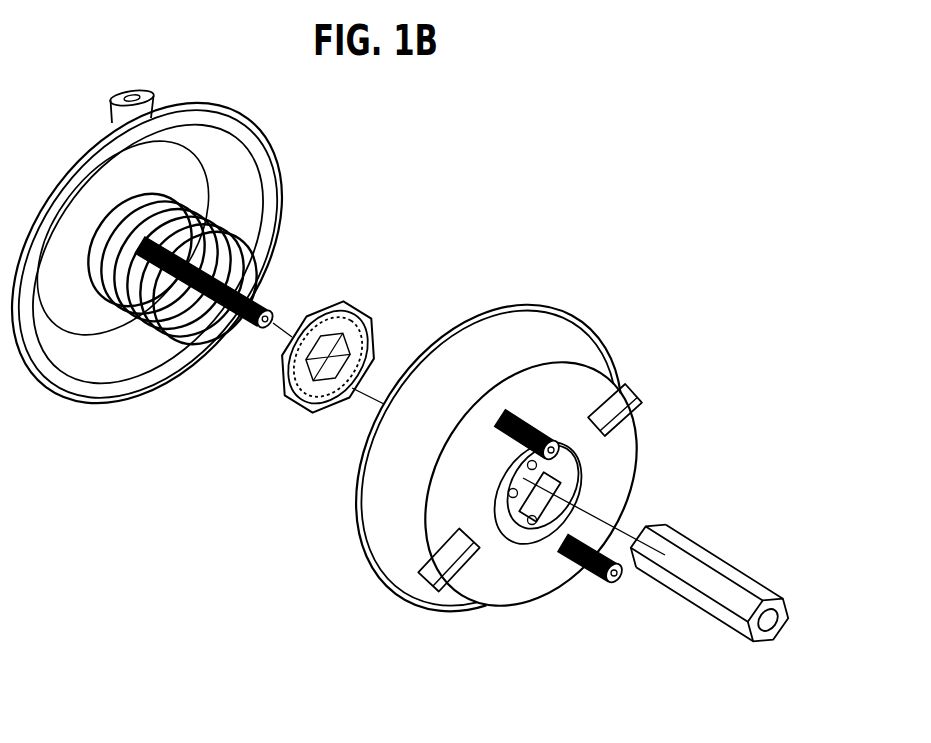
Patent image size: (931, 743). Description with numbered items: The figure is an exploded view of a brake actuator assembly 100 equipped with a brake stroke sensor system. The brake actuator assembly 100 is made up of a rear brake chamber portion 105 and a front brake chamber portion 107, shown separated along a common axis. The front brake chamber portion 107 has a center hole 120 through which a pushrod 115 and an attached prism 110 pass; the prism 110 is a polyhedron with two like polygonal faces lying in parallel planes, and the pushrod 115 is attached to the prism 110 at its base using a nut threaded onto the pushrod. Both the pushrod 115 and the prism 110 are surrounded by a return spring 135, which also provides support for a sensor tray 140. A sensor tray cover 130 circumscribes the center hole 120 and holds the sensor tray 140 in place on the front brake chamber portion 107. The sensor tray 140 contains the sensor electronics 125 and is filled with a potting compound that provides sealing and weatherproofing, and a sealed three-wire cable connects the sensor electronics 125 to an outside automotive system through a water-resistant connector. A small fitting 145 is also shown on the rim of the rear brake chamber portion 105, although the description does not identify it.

The brake actuator assembly 100 is at (160, 680).
The rear brake chamber portion 105 is at (90, 133).
The front brake chamber portion 107 is at (553, 392).
The prism 110 is at (705, 587).
The pushrod 115 is at (262, 338).
The center hole 120 is at (527, 499).
The sensor electronics 125 is at (366, 332).
The sensor tray cover 130 is at (573, 483).
The return spring 135 is at (153, 333).
The sensor tray 140 is at (335, 303).
The collar 145 is at (147, 91).